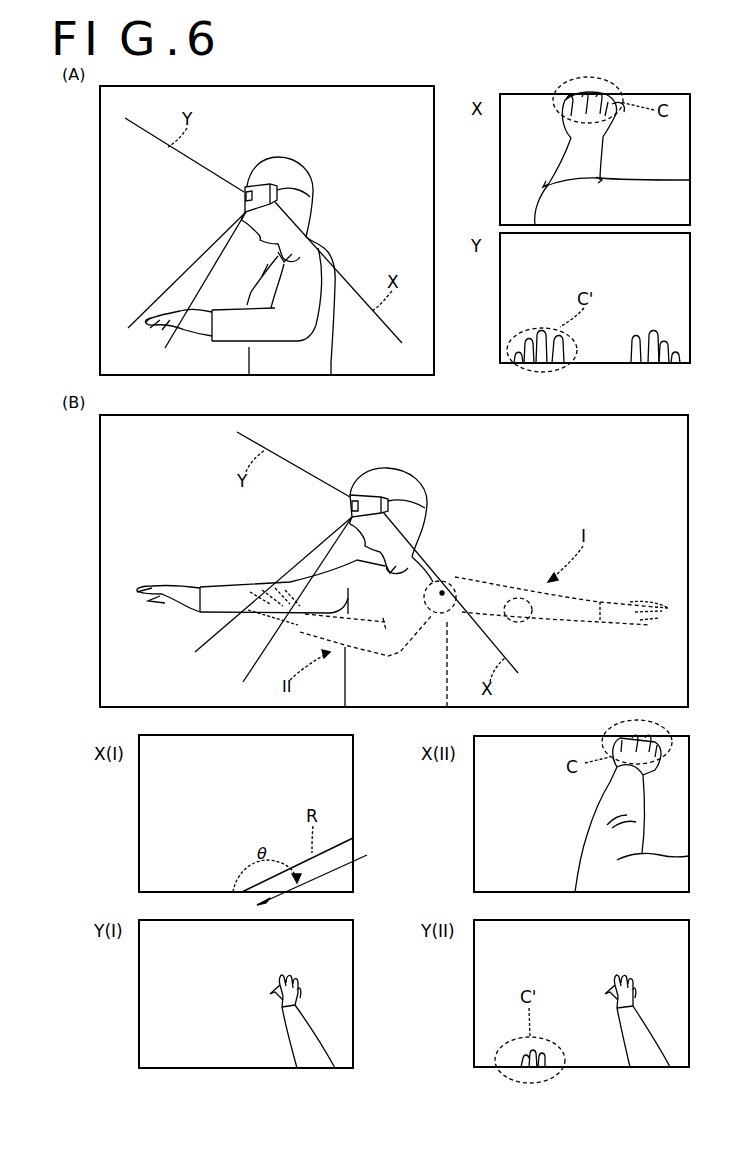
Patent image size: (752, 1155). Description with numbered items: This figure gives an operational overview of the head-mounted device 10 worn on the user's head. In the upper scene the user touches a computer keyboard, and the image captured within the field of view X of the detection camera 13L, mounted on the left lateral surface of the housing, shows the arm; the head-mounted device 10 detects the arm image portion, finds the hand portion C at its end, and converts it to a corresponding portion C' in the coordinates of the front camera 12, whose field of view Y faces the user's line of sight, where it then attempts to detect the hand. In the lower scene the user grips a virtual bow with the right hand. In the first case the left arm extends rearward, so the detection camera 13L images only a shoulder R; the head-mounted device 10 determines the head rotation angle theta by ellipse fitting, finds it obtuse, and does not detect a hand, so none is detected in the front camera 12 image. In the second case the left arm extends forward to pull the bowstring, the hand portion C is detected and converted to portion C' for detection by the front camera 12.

The head-mounted device 10 is at (244, 188).
The front camera 12 is at (228, 204).
The detection camera 13L is at (288, 192).